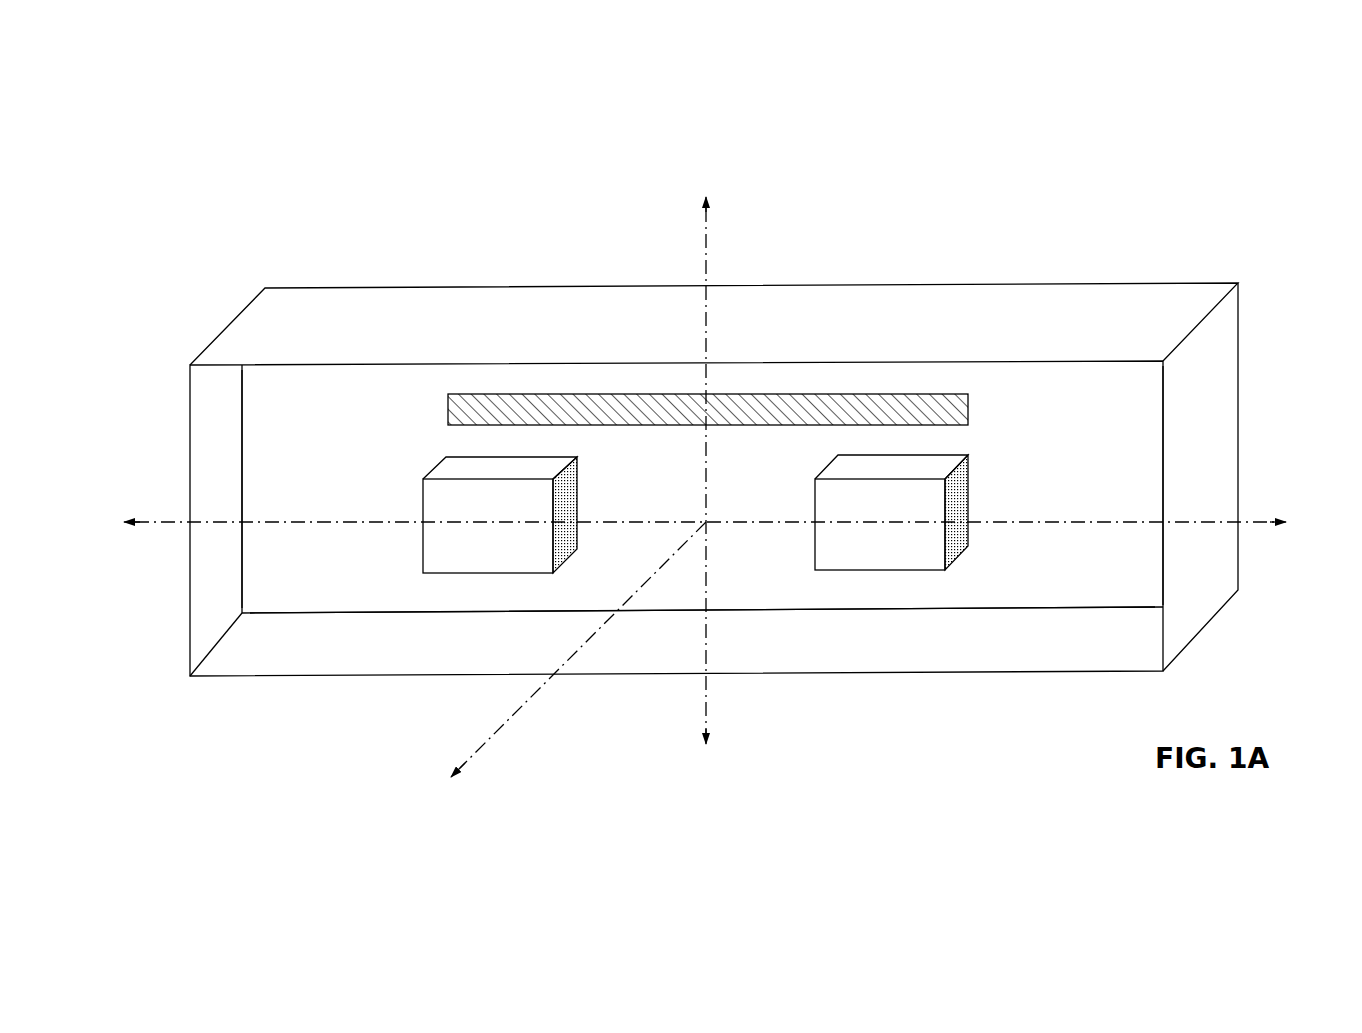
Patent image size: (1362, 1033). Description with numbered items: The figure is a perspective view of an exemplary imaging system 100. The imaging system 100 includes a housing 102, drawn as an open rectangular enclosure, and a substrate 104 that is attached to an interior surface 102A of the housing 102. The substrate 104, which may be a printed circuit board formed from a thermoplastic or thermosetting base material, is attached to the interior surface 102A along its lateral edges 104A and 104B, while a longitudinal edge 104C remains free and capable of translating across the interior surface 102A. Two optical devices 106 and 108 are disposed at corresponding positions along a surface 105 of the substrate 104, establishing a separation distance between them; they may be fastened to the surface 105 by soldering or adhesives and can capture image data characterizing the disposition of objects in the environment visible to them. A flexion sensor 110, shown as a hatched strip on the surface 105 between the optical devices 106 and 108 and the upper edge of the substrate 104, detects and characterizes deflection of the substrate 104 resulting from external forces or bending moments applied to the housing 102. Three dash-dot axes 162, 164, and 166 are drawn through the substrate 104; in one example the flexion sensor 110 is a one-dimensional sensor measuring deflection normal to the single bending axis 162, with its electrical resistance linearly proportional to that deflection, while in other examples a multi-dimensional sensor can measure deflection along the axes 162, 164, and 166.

The imaging system 100 is at (1220, 138).
The housing 102 is at (1200, 440).
The interior surface 102A is at (215, 613).
The substrate 104 is at (1085, 417).
The lateral edge 104A is at (248, 475).
The lateral edge 104B is at (1158, 570).
The longitudinal edge 104C is at (339, 617).
The surface 105 is at (271, 406).
The optical device 106 is at (528, 499).
The optical device 108 is at (933, 502).
The flexion sensor 110 is at (947, 408).
The axis 162 is at (160, 520).
The axis 164 is at (523, 702).
The axis 166 is at (708, 230).